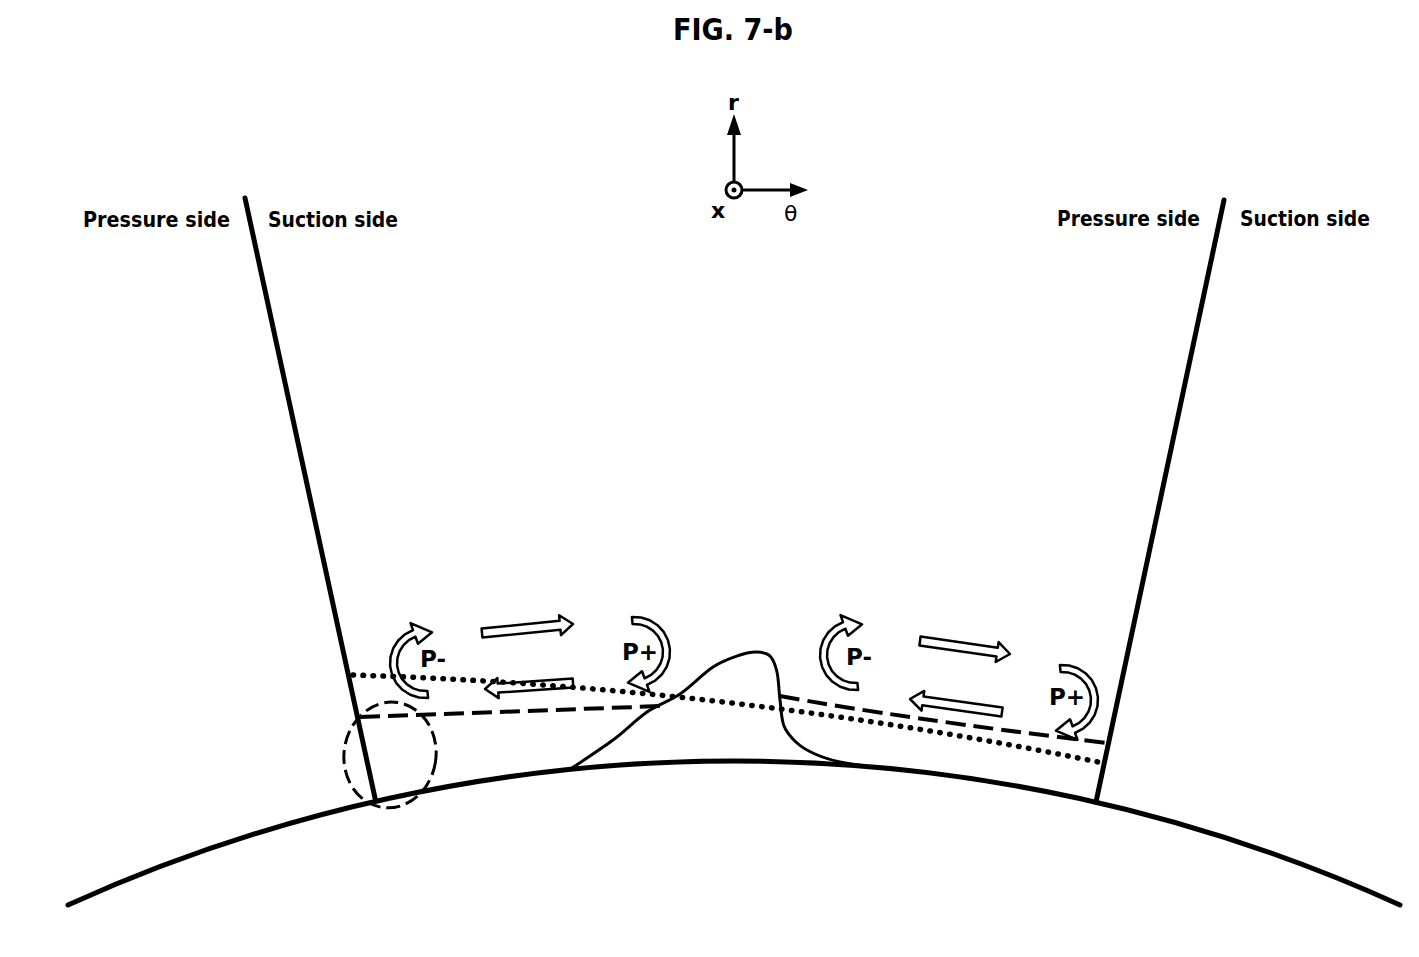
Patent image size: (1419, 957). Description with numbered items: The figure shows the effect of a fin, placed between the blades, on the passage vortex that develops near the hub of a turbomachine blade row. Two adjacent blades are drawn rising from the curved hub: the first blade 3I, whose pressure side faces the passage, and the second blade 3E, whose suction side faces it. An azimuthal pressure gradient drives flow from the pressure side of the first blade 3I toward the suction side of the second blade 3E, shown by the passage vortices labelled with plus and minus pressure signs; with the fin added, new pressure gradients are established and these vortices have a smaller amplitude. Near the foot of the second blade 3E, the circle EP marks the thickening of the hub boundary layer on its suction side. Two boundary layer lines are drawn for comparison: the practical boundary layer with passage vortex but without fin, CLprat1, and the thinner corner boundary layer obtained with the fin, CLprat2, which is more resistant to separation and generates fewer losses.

The second blade 3E is at (299, 454).
The first blade 3I is at (1171, 455).
The circle showing boundary layer thickening EP is at (345, 770).
The practical boundary layer without fin CLprat1 is at (468, 678).
The practical boundary layer with fin CLprat2 is at (525, 715).